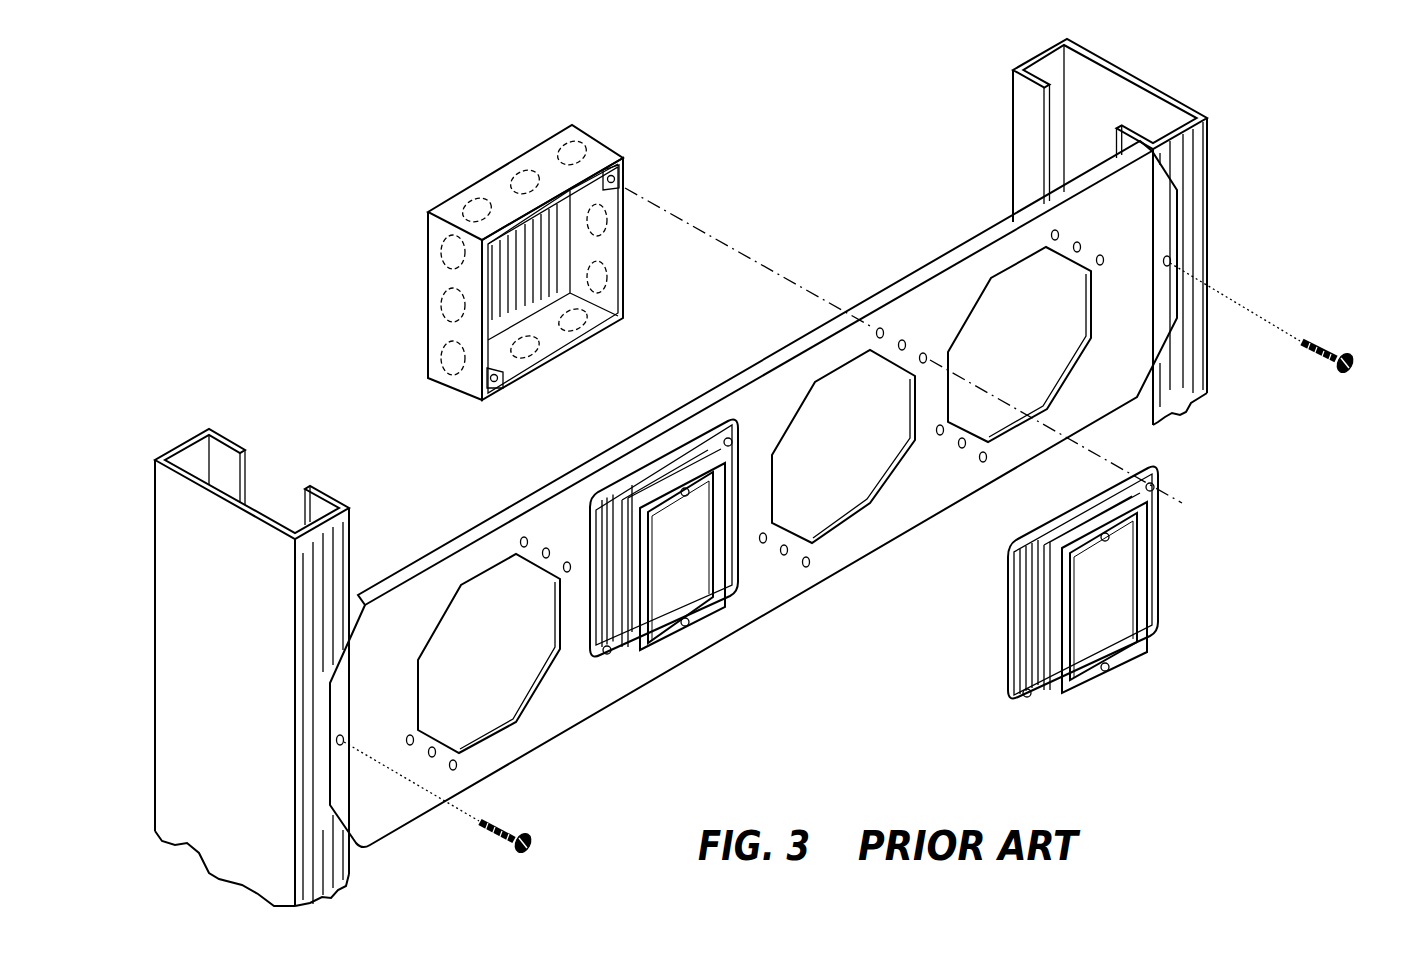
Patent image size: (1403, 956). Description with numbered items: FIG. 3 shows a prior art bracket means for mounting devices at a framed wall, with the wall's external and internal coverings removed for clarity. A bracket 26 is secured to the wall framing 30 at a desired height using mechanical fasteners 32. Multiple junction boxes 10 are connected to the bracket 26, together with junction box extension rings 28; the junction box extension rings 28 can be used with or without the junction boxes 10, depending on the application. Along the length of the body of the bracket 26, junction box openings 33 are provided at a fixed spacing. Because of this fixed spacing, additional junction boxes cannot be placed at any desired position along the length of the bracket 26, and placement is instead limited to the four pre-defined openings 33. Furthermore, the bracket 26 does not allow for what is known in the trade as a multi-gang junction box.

The junction box 10 is at (597, 133).
The bracket 26 is at (779, 617).
The junction box extension ring 28 is at (685, 648).
The wall framing 30 is at (197, 427).
The mechanical fastener 32 is at (513, 855).
The junction box opening 33 is at (490, 670).